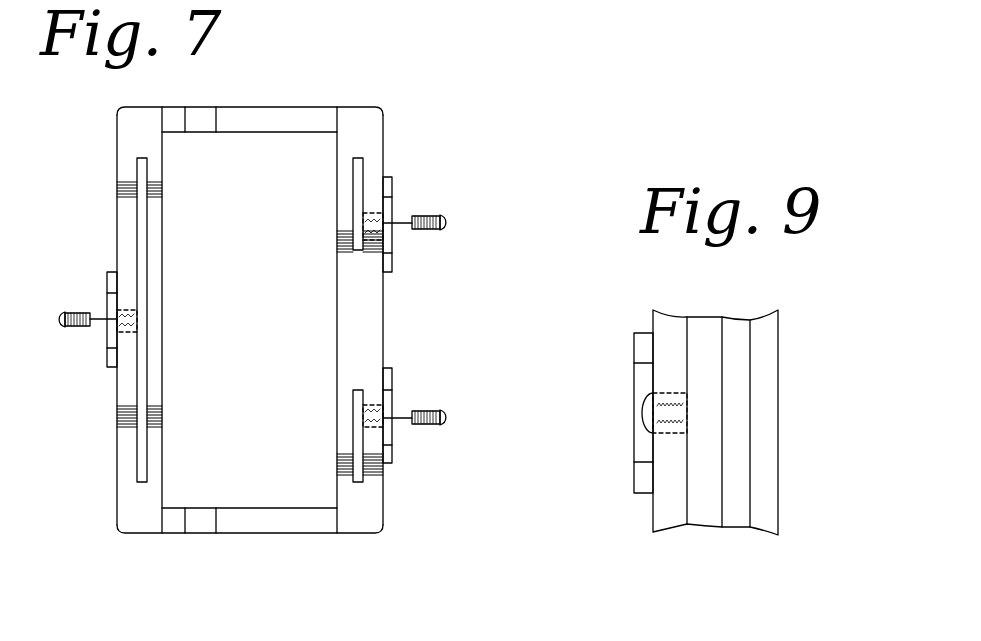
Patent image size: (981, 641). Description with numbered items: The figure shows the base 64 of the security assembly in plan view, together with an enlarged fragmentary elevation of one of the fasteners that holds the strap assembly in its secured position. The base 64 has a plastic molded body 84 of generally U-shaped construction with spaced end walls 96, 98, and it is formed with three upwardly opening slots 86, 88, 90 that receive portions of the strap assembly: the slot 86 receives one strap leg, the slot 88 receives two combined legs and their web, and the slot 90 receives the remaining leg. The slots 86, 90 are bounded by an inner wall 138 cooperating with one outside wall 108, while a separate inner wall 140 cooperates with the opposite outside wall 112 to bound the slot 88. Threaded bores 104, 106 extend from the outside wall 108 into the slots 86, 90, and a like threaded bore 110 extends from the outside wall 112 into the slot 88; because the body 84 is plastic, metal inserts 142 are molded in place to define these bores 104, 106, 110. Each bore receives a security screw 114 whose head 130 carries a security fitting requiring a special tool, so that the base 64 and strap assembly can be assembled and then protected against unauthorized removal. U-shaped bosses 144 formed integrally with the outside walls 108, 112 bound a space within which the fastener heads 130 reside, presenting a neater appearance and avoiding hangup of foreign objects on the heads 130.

In FIG. 7, the base 64 is at (278, 326).
In FIG. 9, the base 64 is at (712, 409).
In FIG. 7, the body 84 is at (250, 88).
In FIG. 7, the slot 86 is at (357, 442).
In FIG. 7, the slot 88 is at (142, 240).
In FIG. 7, the slot 90 is at (357, 195).
In FIG. 7, the end wall 96 is at (295, 533).
In FIG. 7, the end wall 98 is at (232, 107).
In FIG. 7, the threaded bore 104 is at (388, 417).
In FIG. 7, the threaded bore 106 is at (455, 321).
In FIG. 7, the outside wall 108 is at (383, 327).
In FIG. 7, the threaded bore 110 is at (110, 367).
In FIG. 9, the threaded bore 110 is at (652, 433).
In FIG. 7, the outside wall 112 is at (117, 445).
In FIG. 9, the outside wall 112 is at (653, 505).
In FIG. 7, the security screw 114 is at (60, 318).
In FIG. 9, the security screw 114 is at (645, 425).
In FIG. 9, the head 130 is at (606, 417).
In FIG. 7, the inner wall 138 is at (337, 330).
In FIG. 7, the inner wall 140 is at (162, 307).
In FIG. 9, the inner wall 140 is at (712, 431).
In FIG. 7, the metal insert 142 is at (125, 308).
In FIG. 9, the metal insert 142 is at (667, 392).
In FIG. 7, the U-shaped boss 144 is at (392, 252).
In FIG. 9, the U-shaped boss 144 is at (607, 413).